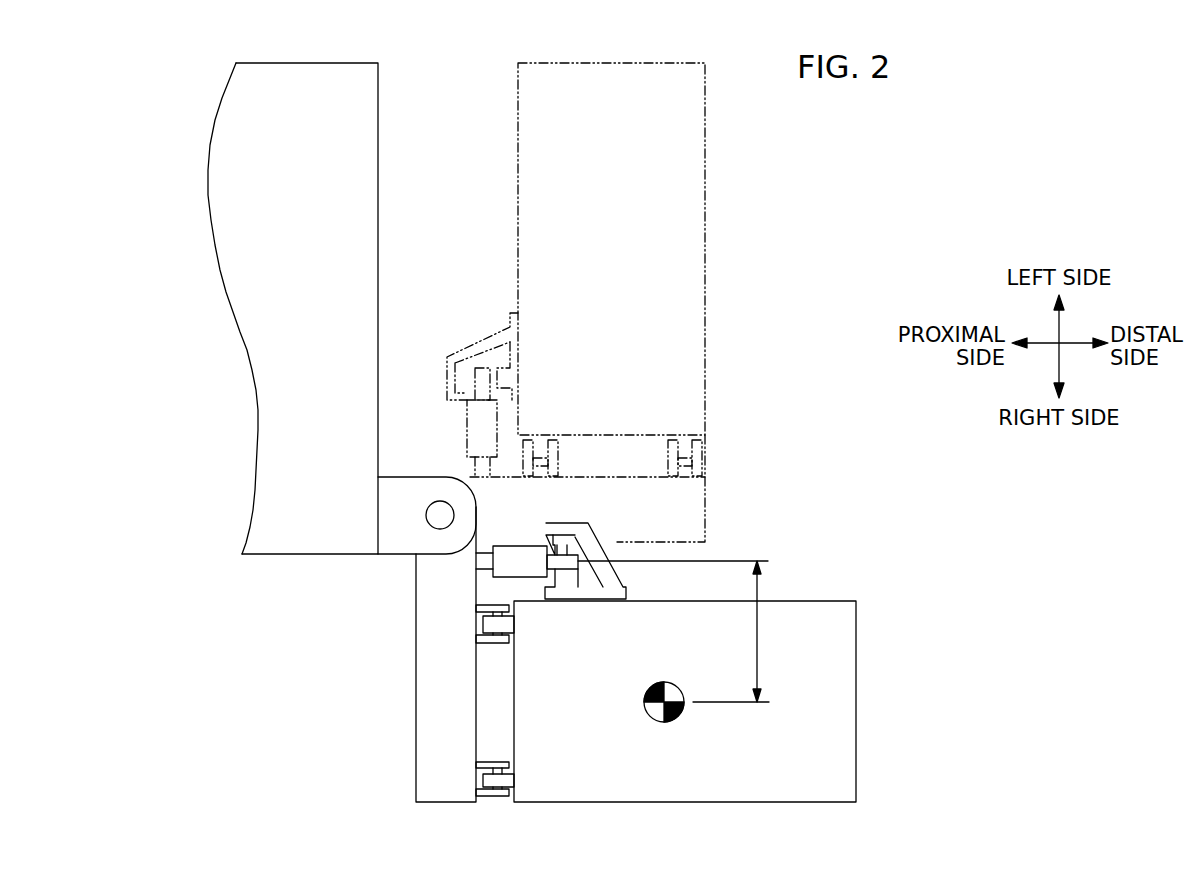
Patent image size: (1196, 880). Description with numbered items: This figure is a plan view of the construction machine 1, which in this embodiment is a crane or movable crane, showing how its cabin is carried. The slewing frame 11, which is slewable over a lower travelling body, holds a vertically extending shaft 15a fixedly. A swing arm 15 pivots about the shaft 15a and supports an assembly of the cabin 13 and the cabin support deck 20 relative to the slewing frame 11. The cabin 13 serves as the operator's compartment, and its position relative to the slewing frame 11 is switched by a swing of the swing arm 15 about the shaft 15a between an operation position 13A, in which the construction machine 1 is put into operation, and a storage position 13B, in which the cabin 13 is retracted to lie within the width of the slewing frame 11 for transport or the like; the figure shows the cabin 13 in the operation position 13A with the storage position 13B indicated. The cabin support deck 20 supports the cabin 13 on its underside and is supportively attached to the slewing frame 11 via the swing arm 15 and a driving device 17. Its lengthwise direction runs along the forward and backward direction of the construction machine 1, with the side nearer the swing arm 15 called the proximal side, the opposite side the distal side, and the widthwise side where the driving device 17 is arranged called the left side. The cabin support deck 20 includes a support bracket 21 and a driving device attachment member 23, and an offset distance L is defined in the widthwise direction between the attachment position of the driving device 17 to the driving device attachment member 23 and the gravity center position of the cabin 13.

The construction machine 1 is at (934, 149).
The slewing frame 11 is at (277, 545).
The cabin 13 is at (712, 432).
The operation position 13A is at (845, 710).
The storage position 13B is at (687, 257).
The swing arm 15 is at (409, 615).
The shaft 15a is at (440, 515).
The driving device 17 is at (520, 556).
The cabin support deck 20 is at (479, 813).
The support bracket 21 is at (488, 628).
The driving device attachment member 23 is at (596, 541).